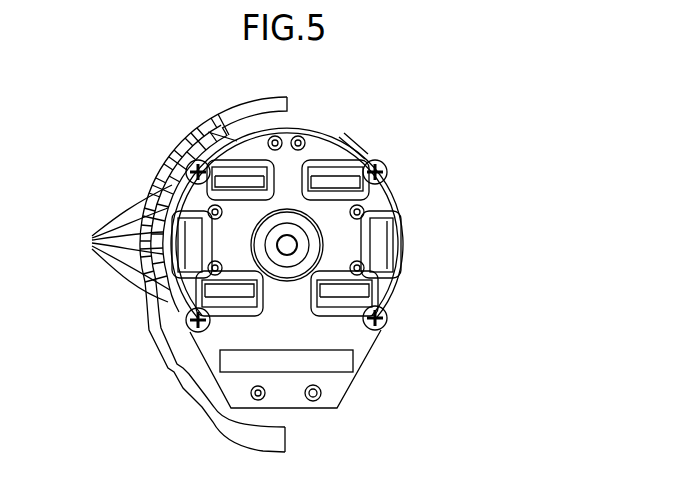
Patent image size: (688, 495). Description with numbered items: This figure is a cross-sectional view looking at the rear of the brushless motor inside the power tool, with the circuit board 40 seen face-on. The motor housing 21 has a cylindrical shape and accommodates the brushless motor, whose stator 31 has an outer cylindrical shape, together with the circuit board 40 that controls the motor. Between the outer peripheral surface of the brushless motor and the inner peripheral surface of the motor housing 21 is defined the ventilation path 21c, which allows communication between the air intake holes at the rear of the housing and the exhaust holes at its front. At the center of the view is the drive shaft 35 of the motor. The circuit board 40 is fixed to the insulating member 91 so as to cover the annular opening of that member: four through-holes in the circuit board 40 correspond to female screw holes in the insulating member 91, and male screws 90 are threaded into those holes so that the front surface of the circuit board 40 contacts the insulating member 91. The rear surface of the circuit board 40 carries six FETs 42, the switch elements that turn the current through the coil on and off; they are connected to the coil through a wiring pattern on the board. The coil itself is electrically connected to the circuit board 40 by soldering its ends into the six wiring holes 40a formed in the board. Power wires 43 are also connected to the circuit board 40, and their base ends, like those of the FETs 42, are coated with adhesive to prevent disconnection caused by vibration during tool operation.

The motor housing 21 is at (218, 123).
The ventilation path 21c is at (110, 243).
The stator 31 is at (367, 143).
The drive shaft 35 is at (287, 249).
The circuit board 40 is at (378, 350).
The wiring holes 40a is at (300, 142).
The FETs 42 is at (355, 290).
The power wires 43 is at (257, 393).
The male screws 90 is at (388, 160).
The insulating member 91 is at (406, 240).